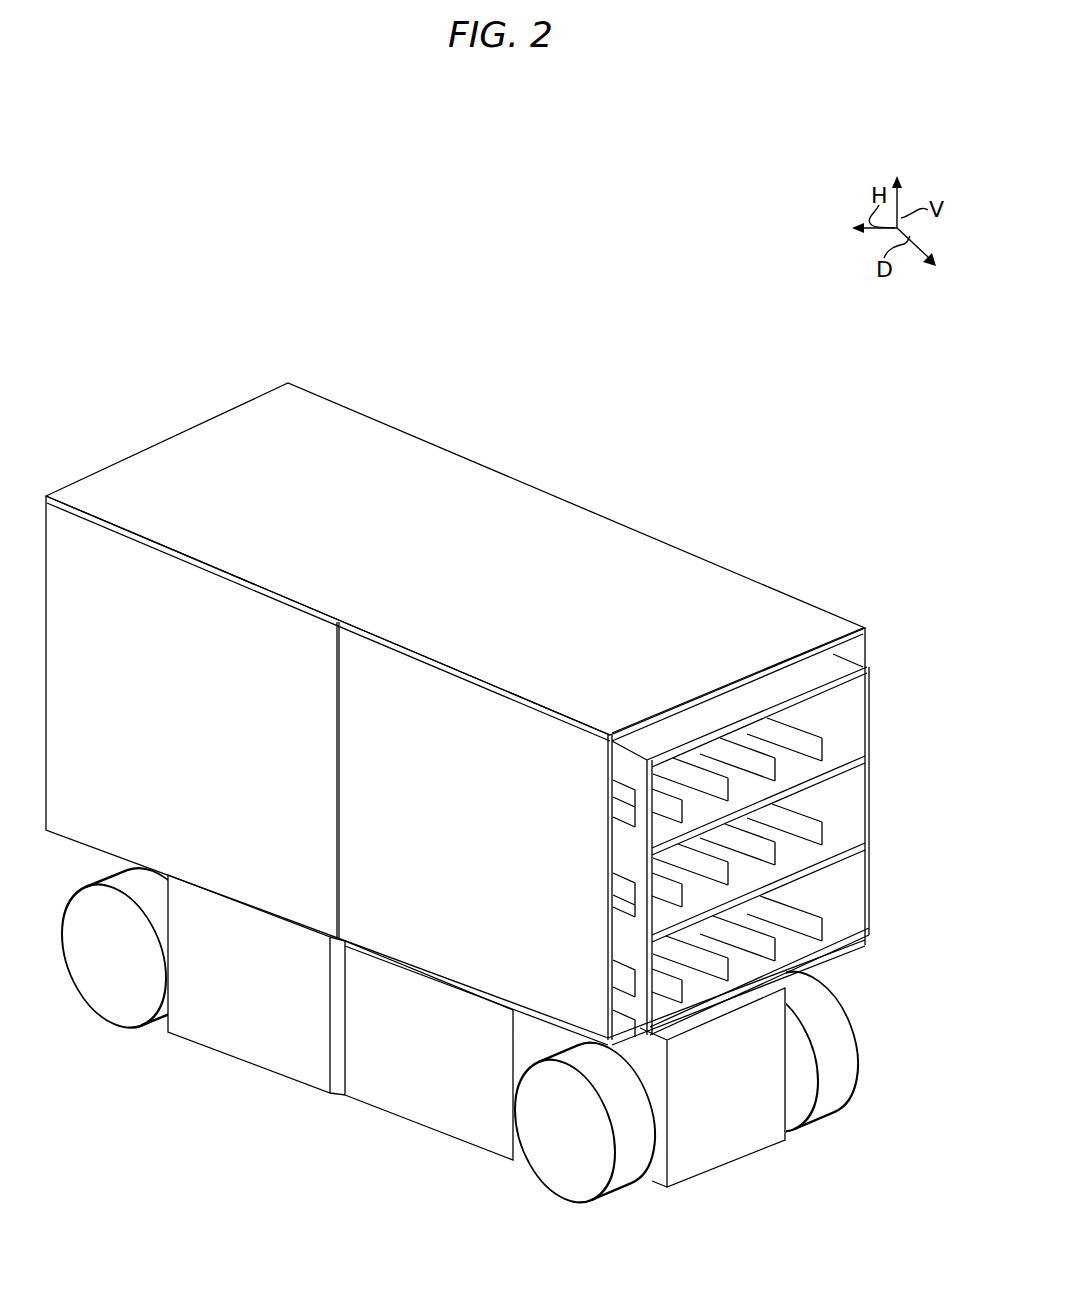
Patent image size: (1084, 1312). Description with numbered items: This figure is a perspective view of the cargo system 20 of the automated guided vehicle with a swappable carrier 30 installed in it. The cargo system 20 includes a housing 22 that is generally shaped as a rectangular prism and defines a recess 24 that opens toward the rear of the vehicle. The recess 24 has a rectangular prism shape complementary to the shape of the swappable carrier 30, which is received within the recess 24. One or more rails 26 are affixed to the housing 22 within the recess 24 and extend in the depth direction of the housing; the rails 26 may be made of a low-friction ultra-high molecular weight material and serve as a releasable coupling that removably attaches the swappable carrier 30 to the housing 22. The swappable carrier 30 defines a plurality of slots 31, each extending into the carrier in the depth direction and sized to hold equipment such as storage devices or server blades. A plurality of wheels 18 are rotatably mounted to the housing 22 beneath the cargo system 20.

The wheels 18 is at (841, 1028).
The cargo system 20 is at (131, 205).
The housing 22 is at (713, 566).
The recess 24 is at (865, 630).
The rails 26 is at (633, 1036).
The swappable carrier 30 is at (868, 667).
The slots 31 is at (870, 817).